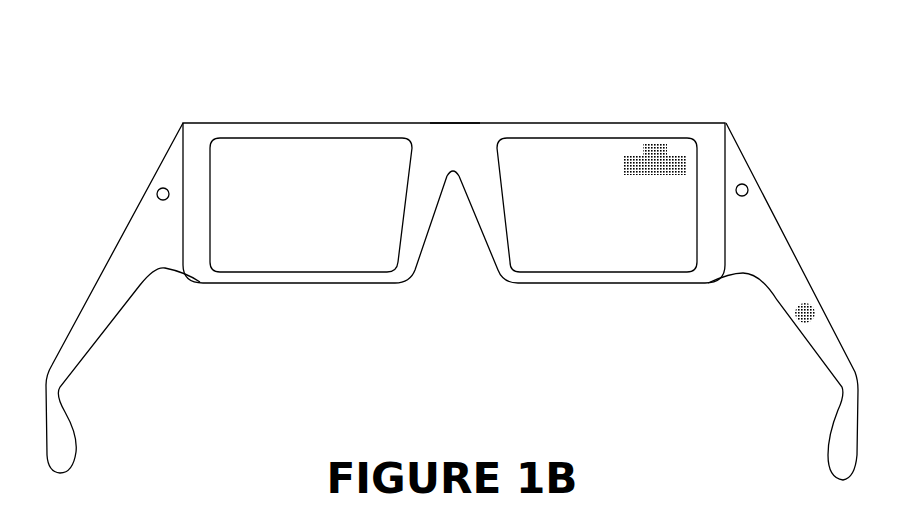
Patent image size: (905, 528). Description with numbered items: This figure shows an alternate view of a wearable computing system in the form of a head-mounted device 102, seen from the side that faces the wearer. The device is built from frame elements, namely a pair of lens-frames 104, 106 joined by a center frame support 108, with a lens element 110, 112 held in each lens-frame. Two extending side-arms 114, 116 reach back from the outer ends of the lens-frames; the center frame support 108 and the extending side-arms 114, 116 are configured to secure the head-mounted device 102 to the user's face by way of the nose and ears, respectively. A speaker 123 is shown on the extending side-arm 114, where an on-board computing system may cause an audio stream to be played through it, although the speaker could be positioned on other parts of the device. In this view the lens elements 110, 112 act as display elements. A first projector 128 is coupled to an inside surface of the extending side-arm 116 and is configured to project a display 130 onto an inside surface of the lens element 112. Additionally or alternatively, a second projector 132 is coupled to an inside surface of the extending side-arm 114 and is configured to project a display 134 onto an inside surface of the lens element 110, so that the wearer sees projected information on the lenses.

The head-mounted device 102 is at (226, 81).
The lens-frame 104 is at (685, 283).
The lens-frame 106 is at (235, 283).
The center frame support 108 is at (452, 122).
The lens element 110 is at (560, 262).
The lens element 112 is at (328, 262).
The extending side-arm 114 is at (782, 232).
The extending side-arm 116 is at (107, 263).
The speaker 123 is at (796, 317).
The first projector 128 is at (157, 193).
The display 130 is at (299, 163).
The second projector 132 is at (742, 184).
The display 134 is at (630, 175).